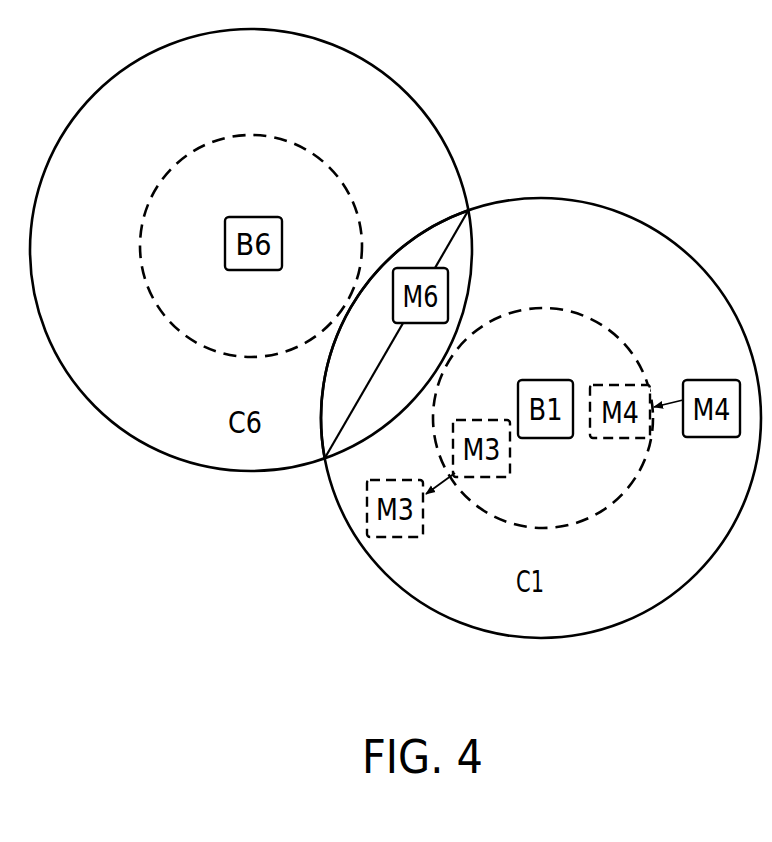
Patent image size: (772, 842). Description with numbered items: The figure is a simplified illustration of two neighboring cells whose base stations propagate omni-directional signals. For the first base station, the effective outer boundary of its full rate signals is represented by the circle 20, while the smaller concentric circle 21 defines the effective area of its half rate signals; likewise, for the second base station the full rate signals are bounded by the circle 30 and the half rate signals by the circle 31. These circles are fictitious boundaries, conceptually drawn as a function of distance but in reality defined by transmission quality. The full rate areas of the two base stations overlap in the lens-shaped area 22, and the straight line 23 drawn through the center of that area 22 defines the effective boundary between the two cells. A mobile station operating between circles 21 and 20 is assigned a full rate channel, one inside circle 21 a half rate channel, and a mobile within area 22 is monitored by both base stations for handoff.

The circle 20 is at (682, 262).
The circle 21 is at (603, 328).
The area 22 is at (372, 366).
The straight line 23 is at (443, 247).
The circle 30 is at (352, 59).
The circle 31 is at (308, 152).